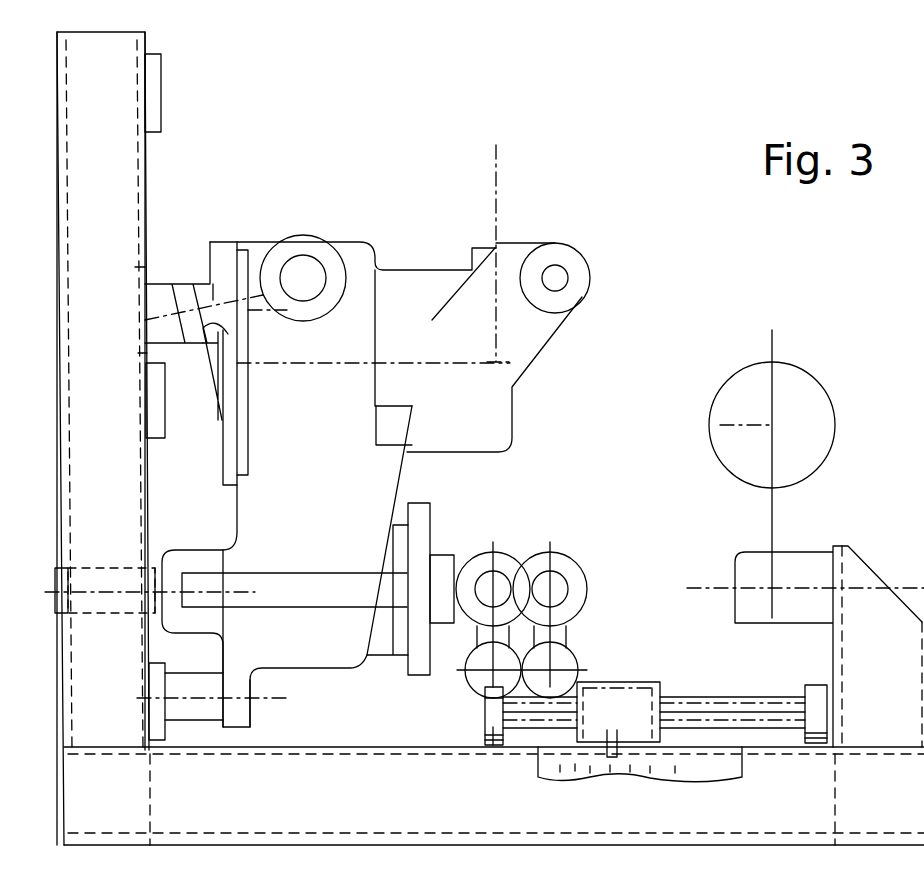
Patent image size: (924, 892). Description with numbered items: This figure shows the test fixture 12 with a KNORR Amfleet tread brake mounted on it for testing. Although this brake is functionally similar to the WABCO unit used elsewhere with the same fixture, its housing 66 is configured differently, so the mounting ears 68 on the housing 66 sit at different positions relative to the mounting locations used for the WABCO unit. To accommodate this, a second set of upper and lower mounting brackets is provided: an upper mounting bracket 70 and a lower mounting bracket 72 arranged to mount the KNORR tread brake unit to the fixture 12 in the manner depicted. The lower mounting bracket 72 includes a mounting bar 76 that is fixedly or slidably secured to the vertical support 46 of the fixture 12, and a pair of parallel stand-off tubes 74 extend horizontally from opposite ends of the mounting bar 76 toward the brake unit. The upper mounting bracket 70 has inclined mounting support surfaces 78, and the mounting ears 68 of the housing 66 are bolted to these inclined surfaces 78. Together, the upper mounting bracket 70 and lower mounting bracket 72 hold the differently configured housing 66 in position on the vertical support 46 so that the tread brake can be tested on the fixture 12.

The test fixture 12 is at (598, 470).
The vertical support 46 is at (128, 483).
The housing 66 is at (370, 487).
The mounting ears 68 is at (207, 297).
The upper mounting bracket 70 is at (158, 295).
The lower mounting bracket 72 is at (200, 716).
The stand-off tubes 74 is at (202, 680).
The mounting bar 76 is at (160, 737).
The inclined mounting support surfaces 78 is at (214, 337).